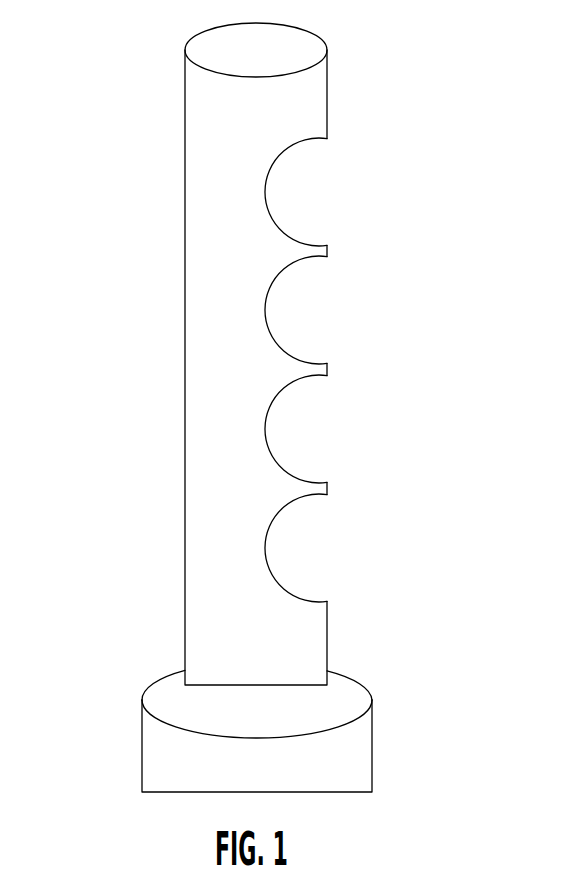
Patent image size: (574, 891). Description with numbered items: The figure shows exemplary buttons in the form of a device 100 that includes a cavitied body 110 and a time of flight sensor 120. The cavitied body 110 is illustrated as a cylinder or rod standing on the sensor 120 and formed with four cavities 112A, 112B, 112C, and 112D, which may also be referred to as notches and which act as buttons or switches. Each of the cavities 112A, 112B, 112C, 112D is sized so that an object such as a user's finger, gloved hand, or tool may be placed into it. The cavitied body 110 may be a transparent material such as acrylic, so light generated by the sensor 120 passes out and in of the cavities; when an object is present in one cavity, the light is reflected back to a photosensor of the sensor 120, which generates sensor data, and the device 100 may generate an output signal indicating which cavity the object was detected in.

The device 100 is at (375, 41).
The cavitied body 110 is at (182, 150).
The cavity 112A is at (271, 209).
The cavity 112B is at (274, 332).
The cavity 112C is at (273, 448).
The cavity 112D is at (274, 563).
The time of flight sensor 120 is at (137, 682).